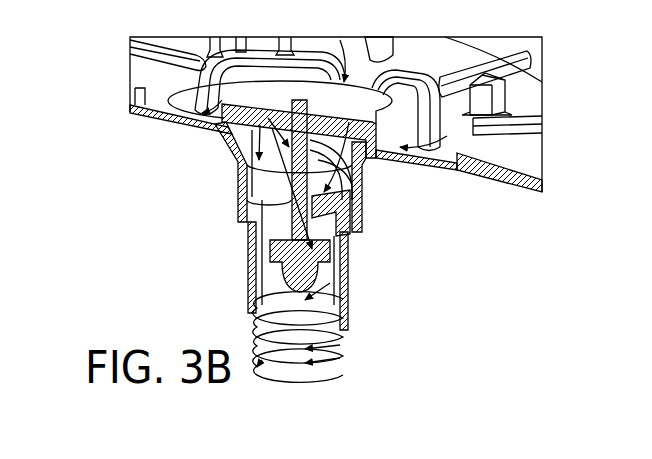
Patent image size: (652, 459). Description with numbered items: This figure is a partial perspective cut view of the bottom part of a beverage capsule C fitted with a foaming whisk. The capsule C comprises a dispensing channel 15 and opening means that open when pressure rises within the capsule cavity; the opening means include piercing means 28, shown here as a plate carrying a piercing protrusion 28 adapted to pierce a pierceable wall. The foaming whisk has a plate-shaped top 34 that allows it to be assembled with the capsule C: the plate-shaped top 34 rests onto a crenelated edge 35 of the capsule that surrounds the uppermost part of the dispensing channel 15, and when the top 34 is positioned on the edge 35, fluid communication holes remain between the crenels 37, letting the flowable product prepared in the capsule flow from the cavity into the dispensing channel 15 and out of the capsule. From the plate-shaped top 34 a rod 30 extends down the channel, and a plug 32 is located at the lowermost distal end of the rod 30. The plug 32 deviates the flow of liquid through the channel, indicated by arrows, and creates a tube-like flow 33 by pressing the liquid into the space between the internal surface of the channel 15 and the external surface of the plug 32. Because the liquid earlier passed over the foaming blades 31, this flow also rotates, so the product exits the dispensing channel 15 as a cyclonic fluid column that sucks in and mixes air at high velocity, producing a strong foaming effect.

The piercing means 28 is at (493, 102).
The plate-shaped top 34 is at (369, 118).
The crenels 37 is at (222, 122).
The capsule C is at (131, 124).
The crenelated edge 35 is at (223, 146).
The rod 30 is at (288, 203).
The dispensing channel 15 is at (262, 227).
The foaming blades 31 is at (320, 184).
The plug 32 is at (326, 283).
The tube-like flow 33 is at (345, 352).